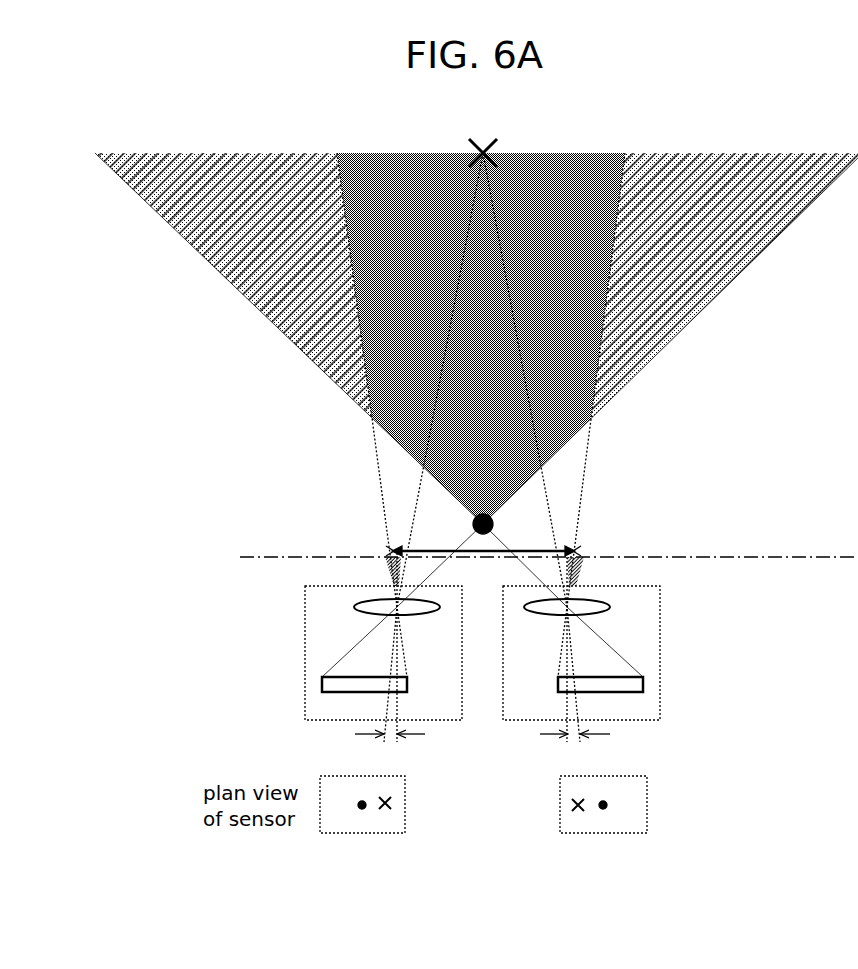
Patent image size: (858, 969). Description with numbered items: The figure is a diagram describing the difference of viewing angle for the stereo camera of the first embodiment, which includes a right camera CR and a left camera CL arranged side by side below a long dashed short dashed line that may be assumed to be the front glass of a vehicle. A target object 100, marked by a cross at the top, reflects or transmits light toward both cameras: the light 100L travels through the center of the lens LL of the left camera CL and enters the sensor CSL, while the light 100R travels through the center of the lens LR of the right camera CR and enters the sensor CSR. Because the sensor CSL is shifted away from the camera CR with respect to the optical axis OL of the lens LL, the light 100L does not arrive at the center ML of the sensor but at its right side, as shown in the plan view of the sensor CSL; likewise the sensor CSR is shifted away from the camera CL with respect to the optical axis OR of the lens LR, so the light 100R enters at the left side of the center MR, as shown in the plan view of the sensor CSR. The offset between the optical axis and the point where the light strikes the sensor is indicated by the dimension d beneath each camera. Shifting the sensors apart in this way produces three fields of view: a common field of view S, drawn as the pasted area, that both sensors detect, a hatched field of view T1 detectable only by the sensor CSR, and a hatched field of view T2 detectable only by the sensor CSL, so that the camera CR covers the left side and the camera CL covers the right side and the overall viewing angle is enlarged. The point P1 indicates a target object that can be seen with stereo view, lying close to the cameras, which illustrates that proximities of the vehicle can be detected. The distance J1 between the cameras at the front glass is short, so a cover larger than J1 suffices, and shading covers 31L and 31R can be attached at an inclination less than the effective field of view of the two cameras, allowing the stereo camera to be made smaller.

The field of view T1 is at (273, 167).
The field of view T2 is at (703, 167).
The common field of view S is at (575, 174).
The target object 100 is at (473, 142).
The light 100L is at (462, 214).
The light 100R is at (507, 214).
The target object seen with stereo view P1 is at (473, 524).
The distance J1 is at (575, 546).
The optical axis OL is at (386, 551).
The optical axis OR is at (578, 551).
The shading cover 31L is at (385, 573).
The shading cover 31R is at (581, 576).
The left camera CL is at (304, 658).
The right camera CR is at (656, 658).
The lens LL is at (356, 607).
The lens LR is at (608, 607).
The sensor CSL is at (334, 696).
The sensor CSR is at (590, 696).
The image shift distance d is at (482, 750).
The center ML is at (360, 803).
The center MR is at (604, 802).